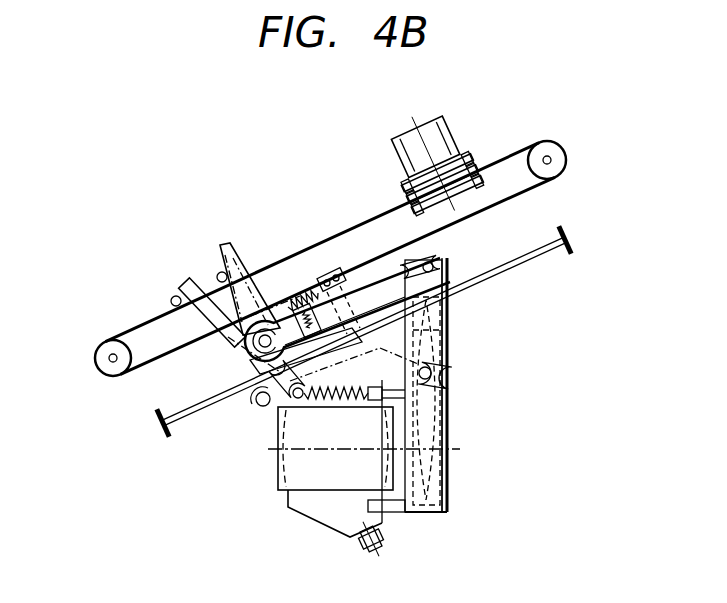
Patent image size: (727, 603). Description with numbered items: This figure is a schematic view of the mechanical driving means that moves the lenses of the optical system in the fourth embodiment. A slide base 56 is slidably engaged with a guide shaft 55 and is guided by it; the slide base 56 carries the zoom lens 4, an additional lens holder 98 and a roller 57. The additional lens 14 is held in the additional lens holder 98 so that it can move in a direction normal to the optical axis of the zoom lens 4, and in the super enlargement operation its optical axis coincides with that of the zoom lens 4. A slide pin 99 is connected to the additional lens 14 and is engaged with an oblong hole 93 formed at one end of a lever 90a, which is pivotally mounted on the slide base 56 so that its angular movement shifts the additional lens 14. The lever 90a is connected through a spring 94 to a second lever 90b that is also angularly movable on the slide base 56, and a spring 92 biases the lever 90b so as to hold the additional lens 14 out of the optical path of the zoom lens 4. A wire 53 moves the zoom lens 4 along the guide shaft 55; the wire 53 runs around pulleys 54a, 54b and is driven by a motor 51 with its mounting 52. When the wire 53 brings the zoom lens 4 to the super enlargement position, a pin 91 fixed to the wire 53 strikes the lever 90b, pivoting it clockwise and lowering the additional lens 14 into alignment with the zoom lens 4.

The zoom lens 4 is at (285, 470).
The additional lens 14 is at (446, 334).
The motor 51 is at (446, 118).
The motor mounting flange 52 is at (476, 158).
The wire 53 is at (340, 268).
The conveyor pulley 54a is at (103, 346).
The conveyor pulley 54b is at (588, 136).
The guide shaft 55 is at (548, 258).
The slide base 56 is at (322, 515).
The roller 57 is at (360, 548).
The lever 90a is at (362, 290).
The lever 90b is at (188, 281).
The pin 91 is at (171, 300).
The spring 92 is at (332, 396).
The oblong hole 93 is at (400, 270).
The spring 94 is at (270, 272).
The additional lens holder 98 is at (432, 512).
The slide pin 99 is at (446, 262).